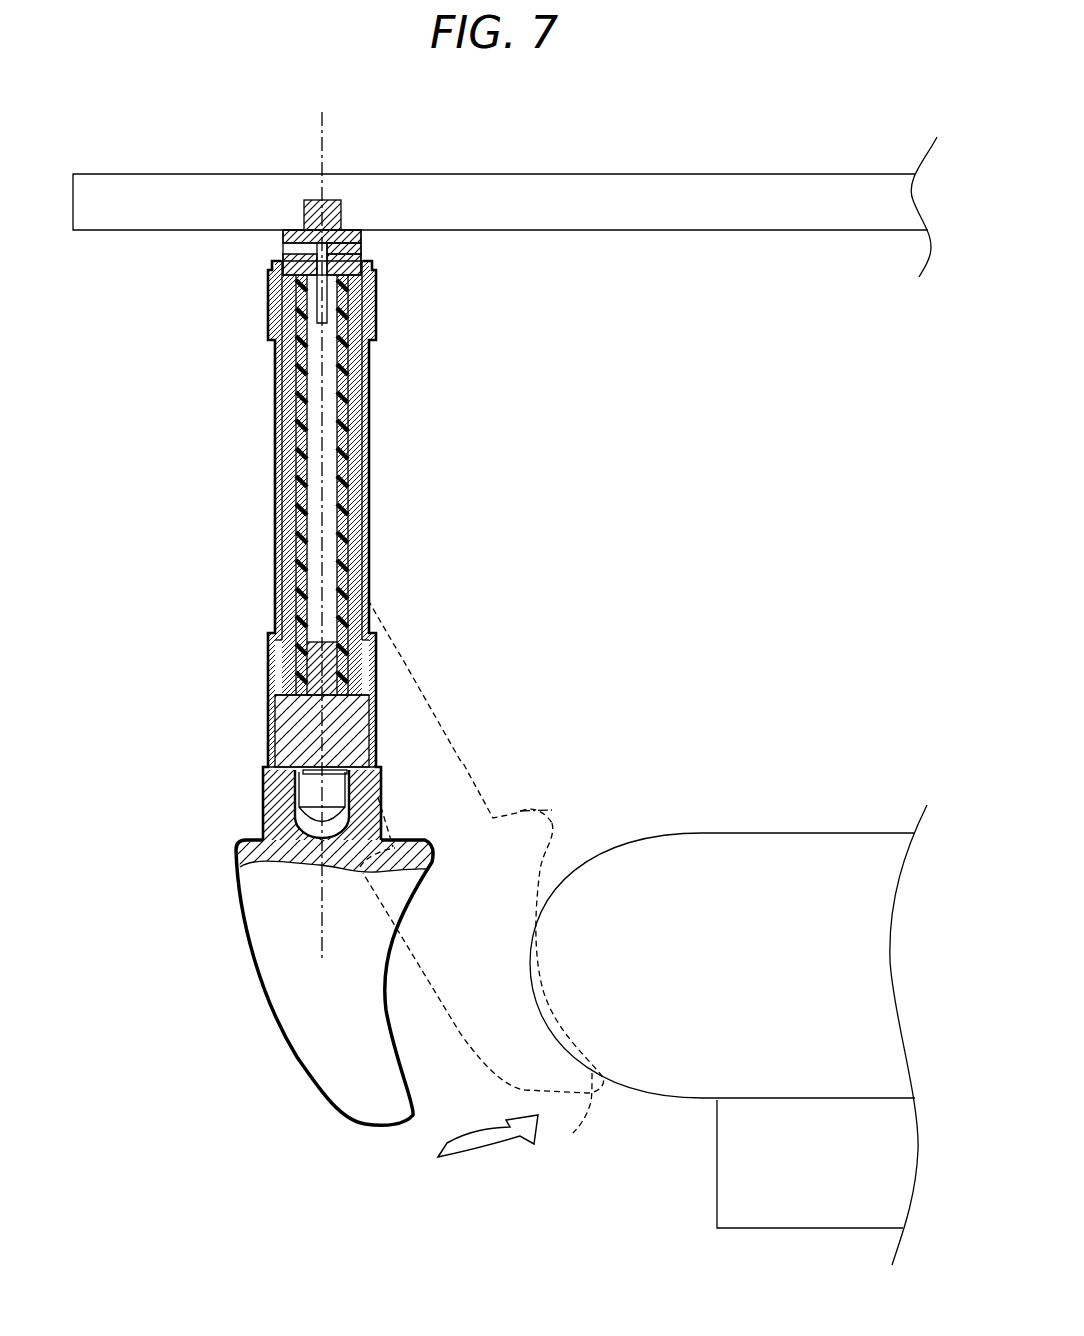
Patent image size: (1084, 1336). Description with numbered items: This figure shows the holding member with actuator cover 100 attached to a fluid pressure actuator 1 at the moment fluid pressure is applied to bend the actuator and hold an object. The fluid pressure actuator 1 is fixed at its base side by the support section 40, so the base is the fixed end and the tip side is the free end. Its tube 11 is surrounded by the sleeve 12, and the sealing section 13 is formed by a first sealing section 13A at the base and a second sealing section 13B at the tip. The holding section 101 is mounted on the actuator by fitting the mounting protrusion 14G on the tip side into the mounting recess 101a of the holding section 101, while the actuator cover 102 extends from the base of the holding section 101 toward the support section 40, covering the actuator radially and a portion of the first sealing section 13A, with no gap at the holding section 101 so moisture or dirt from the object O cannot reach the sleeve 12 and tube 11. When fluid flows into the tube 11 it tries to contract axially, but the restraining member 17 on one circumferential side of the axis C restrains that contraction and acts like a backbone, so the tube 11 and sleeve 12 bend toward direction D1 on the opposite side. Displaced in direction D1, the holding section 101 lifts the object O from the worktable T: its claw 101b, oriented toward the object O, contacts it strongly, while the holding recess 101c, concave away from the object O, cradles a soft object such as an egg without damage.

The fluid pressure actuator 1 is at (307, 520).
The tube 11 is at (305, 350).
The sleeve 12 is at (297, 582).
The sealing section 13 is at (243, 483).
The first sealing section 13A is at (280, 234).
The second sealing section 13B is at (298, 726).
The mounting protrusion 14G is at (312, 797).
The restraining member 17 is at (287, 413).
The support section 40 is at (117, 203).
The holding member with actuator cover 100 is at (246, 801).
The holding section 101 is at (327, 1012).
The mounting recess 101a is at (352, 813).
The claw 101b is at (410, 874).
The holding recess 101c is at (387, 993).
The actuator cover 102 is at (275, 485).
The axis C is at (321, 523).
The object O is at (780, 845).
The worktable T is at (742, 1165).
The direction D1 is at (488, 1158).